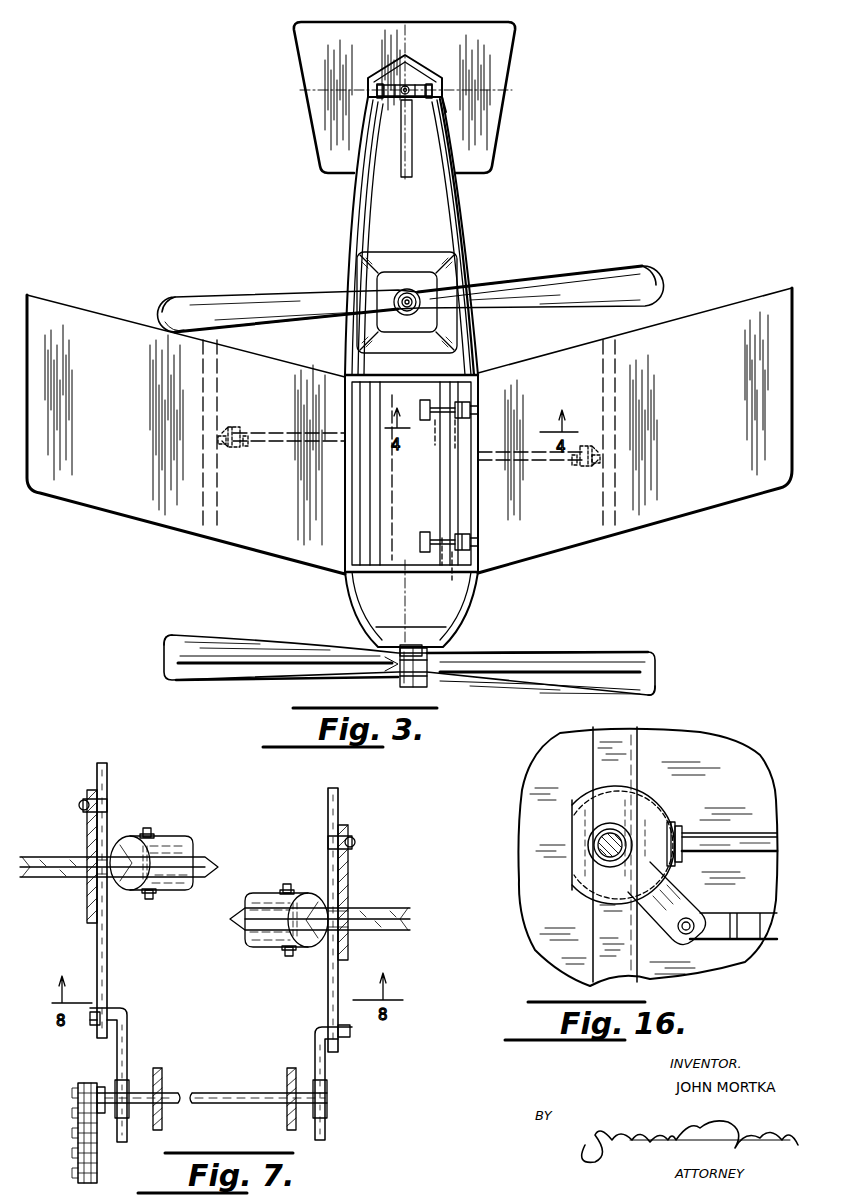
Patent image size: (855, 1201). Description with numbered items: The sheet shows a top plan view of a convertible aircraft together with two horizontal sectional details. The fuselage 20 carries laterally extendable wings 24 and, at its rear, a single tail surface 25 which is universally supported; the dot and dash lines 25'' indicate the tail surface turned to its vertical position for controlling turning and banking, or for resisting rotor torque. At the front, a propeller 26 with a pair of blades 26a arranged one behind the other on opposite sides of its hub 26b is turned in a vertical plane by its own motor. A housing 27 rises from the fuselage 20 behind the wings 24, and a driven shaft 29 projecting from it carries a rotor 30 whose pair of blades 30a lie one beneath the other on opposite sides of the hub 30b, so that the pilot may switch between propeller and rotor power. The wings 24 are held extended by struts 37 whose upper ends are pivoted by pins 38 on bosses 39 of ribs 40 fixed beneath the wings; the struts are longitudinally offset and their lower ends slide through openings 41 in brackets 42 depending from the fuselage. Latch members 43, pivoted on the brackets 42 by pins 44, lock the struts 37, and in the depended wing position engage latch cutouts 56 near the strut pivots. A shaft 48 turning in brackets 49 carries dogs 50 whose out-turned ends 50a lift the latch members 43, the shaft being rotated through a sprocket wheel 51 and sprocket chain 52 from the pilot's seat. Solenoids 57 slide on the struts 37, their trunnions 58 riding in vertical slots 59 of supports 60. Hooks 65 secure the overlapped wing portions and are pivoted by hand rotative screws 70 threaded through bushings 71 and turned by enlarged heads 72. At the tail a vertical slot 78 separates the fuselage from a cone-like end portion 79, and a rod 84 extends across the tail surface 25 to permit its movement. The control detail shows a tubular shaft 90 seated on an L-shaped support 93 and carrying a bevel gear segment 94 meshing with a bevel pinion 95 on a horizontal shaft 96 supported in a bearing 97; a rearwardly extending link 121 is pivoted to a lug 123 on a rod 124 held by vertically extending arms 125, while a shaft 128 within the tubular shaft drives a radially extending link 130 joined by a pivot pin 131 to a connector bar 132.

In FIG. 3, the fuselage 20 is at (452, 225).
In FIG. 16, the fuselage 20 is at (562, 762).
In FIG. 3, the wings 24 is at (120, 500).
In FIG. 3, the tail surface 25 is at (418, 97).
In FIG. 3, the dot and dash lines showing vertical position of tail surface 25'' is at (431, 102).
In FIG. 3, the propeller 26 is at (632, 658).
In FIG. 3, the blades of propeller 26a is at (586, 640).
In FIG. 3, the hub of propeller 26b is at (395, 668).
In FIG. 3, the housing 27 is at (450, 279).
In FIG. 3, the driven shaft 29 is at (410, 294).
In FIG. 3, the rotor 30 is at (537, 300).
In FIG. 3, the blades of rotor 30a is at (614, 240).
In FIG. 3, the hub of rotor 30b is at (401, 292).
In FIG. 3, the struts 37 is at (280, 446).
In FIG. 7, the struts 37 is at (51, 850).
In FIG. 3, the pins 38 is at (242, 424).
In FIG. 3, the bosses 39 is at (223, 445).
In FIG. 3, the ribs 40 is at (206, 370).
In FIG. 7, the openings 41 is at (85, 880).
In FIG. 7, the brackets 42 is at (90, 916).
In FIG. 7, the latch members 43 is at (105, 826).
In FIG. 7, the pins 44 is at (108, 806).
In FIG. 7, the shaft 48 is at (180, 1110).
In FIG. 7, the brackets 49 is at (163, 1086).
In FIG. 7, the dogs 50 is at (128, 1052).
In FIG. 7, the out-turned end of dog 50a is at (380, 1046).
In FIG. 7, the sprocket wheel 51 is at (78, 1096).
In FIG. 7, the sprocket chain 52 is at (78, 1170).
In FIG. 3, the latch cutouts 56 is at (250, 447).
In FIG. 7, the solenoids 57 is at (180, 856).
In FIG. 7, the trunnions 58 is at (150, 831).
In FIG. 7, the vertical slots 59 is at (142, 894).
In FIG. 7, the supports 60 is at (156, 835).
In FIG. 3, the hooks 65 is at (470, 410).
In FIG. 3, the hand rotative screws 70 is at (436, 420).
In FIG. 3, the bushings 71 is at (455, 422).
In FIG. 3, the enlarged heads 72 is at (422, 410).
In FIG. 3, the vertical slot 78 is at (446, 112).
In FIG. 3, the cone-like end portion 79 is at (418, 74).
In FIG. 3, the rod 84 is at (483, 97).
In FIG. 16, the tubular shaft 90 is at (594, 840).
In FIG. 16, the L-shaped support 93 is at (622, 742).
In FIG. 16, the bevel gear segment 94 is at (626, 808).
In FIG. 16, the bevel pinion 95 is at (680, 832).
In FIG. 16, the horizontal shaft 96 is at (738, 838).
In FIG. 16, the bearing 97 is at (652, 828).
In FIG. 3, the rearwardly extending link 121 is at (401, 98).
In FIG. 3, the lug 123 is at (395, 88).
In FIG. 3, the rod 124 is at (412, 148).
In FIG. 3, the vertically extending arms 125 is at (378, 91).
In FIG. 16, the shaft 128 is at (598, 852).
In FIG. 16, the radially extending link 130 is at (665, 902).
In FIG. 16, the pivot pin 131 is at (680, 935).
In FIG. 16, the connector bar 132 is at (744, 935).